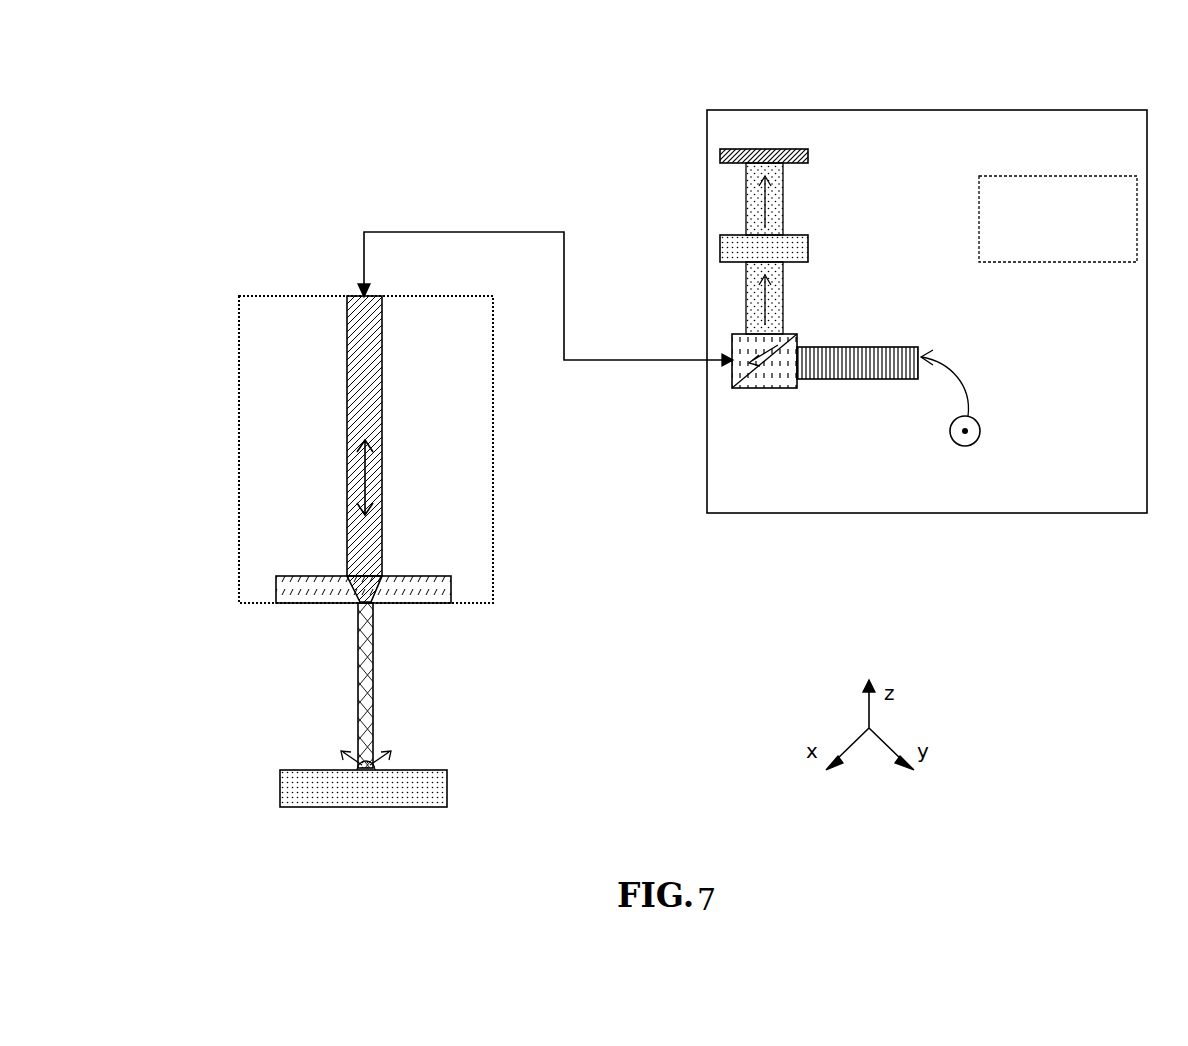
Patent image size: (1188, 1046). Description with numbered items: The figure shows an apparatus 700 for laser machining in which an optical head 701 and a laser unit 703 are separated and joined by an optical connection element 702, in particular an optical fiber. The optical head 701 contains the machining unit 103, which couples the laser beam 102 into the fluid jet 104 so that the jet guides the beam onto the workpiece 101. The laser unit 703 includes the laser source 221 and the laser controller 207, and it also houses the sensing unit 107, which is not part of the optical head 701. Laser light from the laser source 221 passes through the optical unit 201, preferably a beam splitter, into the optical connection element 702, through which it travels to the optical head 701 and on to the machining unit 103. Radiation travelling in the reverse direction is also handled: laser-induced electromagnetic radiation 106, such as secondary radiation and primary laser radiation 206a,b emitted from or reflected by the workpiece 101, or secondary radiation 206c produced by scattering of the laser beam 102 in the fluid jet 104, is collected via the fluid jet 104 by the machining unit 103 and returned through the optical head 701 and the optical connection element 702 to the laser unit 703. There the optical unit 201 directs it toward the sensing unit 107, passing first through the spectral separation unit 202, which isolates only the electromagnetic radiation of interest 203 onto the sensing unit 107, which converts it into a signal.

The apparatus 700 is at (592, 98).
The optical head 701 is at (300, 296).
The optical connection element 702 is at (532, 232).
The laser unit 703 is at (978, 110).
The laser controller 207 is at (1067, 176).
The sensing unit 107 is at (810, 157).
The electromagnetic radiation of interest 203 is at (785, 203).
The spectral separation unit 202 is at (810, 243).
The laser-induced electromagnetic radiation 106 is at (785, 289).
The optical unit 201 is at (738, 333).
The laser source 221 is at (950, 432).
The laser beam 102 is at (382, 397).
The machining unit 103 is at (451, 587).
The fluid jet 104 is at (375, 660).
The secondary radiation 206c is at (358, 727).
The secondary radiation and primary laser radiation 206a,b is at (345, 768).
The workpiece 101 is at (447, 785).